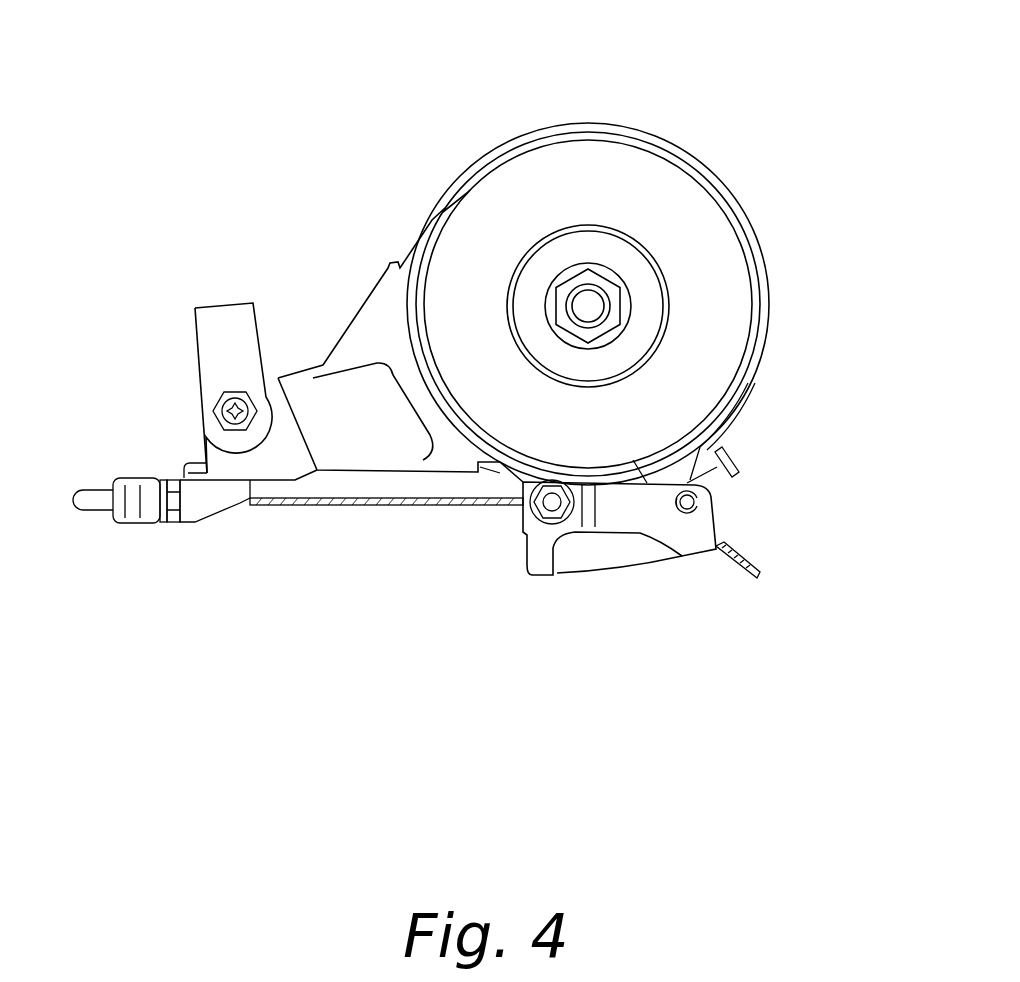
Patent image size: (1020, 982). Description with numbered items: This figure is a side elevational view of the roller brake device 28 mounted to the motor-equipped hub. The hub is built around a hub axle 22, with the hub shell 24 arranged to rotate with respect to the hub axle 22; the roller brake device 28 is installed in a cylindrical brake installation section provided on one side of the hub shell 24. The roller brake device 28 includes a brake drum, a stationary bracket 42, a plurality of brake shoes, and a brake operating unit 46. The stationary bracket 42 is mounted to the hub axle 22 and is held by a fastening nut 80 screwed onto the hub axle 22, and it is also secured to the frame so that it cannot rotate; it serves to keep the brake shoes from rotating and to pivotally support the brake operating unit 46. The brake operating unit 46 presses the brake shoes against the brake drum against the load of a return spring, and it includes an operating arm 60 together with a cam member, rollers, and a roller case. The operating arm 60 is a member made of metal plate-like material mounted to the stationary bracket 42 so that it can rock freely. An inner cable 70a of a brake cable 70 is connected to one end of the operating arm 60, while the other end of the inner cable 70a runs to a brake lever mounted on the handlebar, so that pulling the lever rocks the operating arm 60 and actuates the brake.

The hub axle 22 is at (577, 306).
The hub shell 24 is at (491, 152).
The roller brake device 28 is at (745, 133).
The stationary bracket 42 is at (722, 288).
The brake operating unit 46 is at (675, 537).
The operating arm 60 is at (720, 465).
The brake cable 70 is at (95, 510).
The inner cable 70a is at (305, 505).
The fastening nut 80 is at (588, 273).